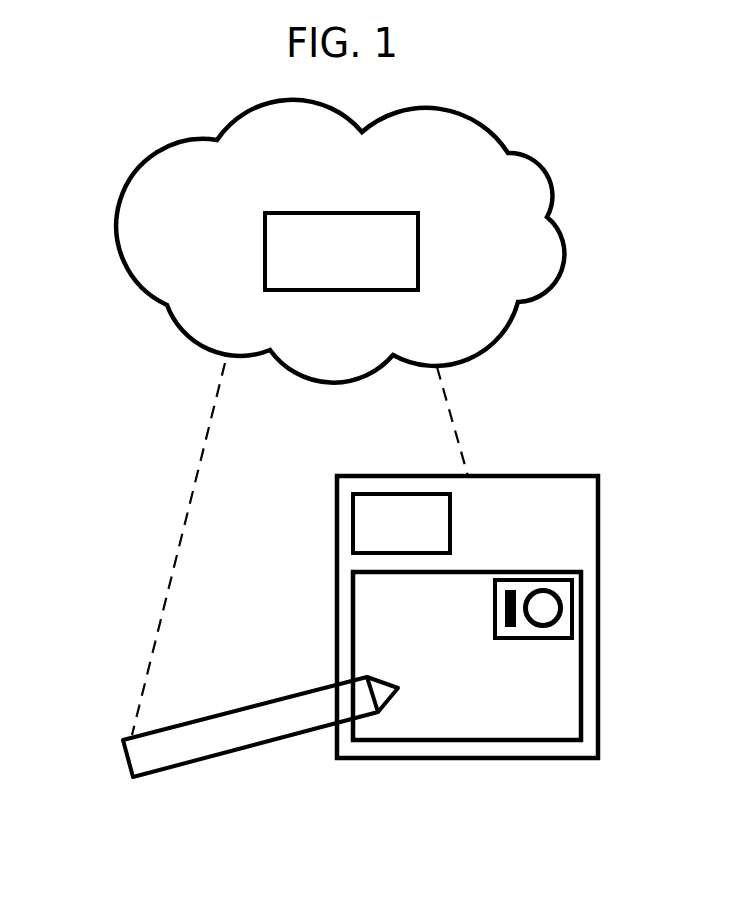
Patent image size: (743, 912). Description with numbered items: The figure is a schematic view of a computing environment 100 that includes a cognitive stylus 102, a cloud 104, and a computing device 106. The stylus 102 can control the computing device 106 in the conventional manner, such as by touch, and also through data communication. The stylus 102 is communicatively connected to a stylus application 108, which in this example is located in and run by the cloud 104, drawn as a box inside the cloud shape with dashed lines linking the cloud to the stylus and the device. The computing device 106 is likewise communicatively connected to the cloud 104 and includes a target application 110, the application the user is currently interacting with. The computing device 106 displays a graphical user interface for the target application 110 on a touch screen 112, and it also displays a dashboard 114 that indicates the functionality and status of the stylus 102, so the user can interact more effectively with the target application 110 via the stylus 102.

The computing environment 100 is at (606, 214).
The stylus 102 is at (232, 752).
The cloud 104 is at (135, 172).
The computing device 106 is at (336, 562).
The stylus application 108 is at (365, 267).
The target application 110 is at (425, 539).
The touch screen 112 is at (443, 671).
The dashboard 114 is at (570, 607).